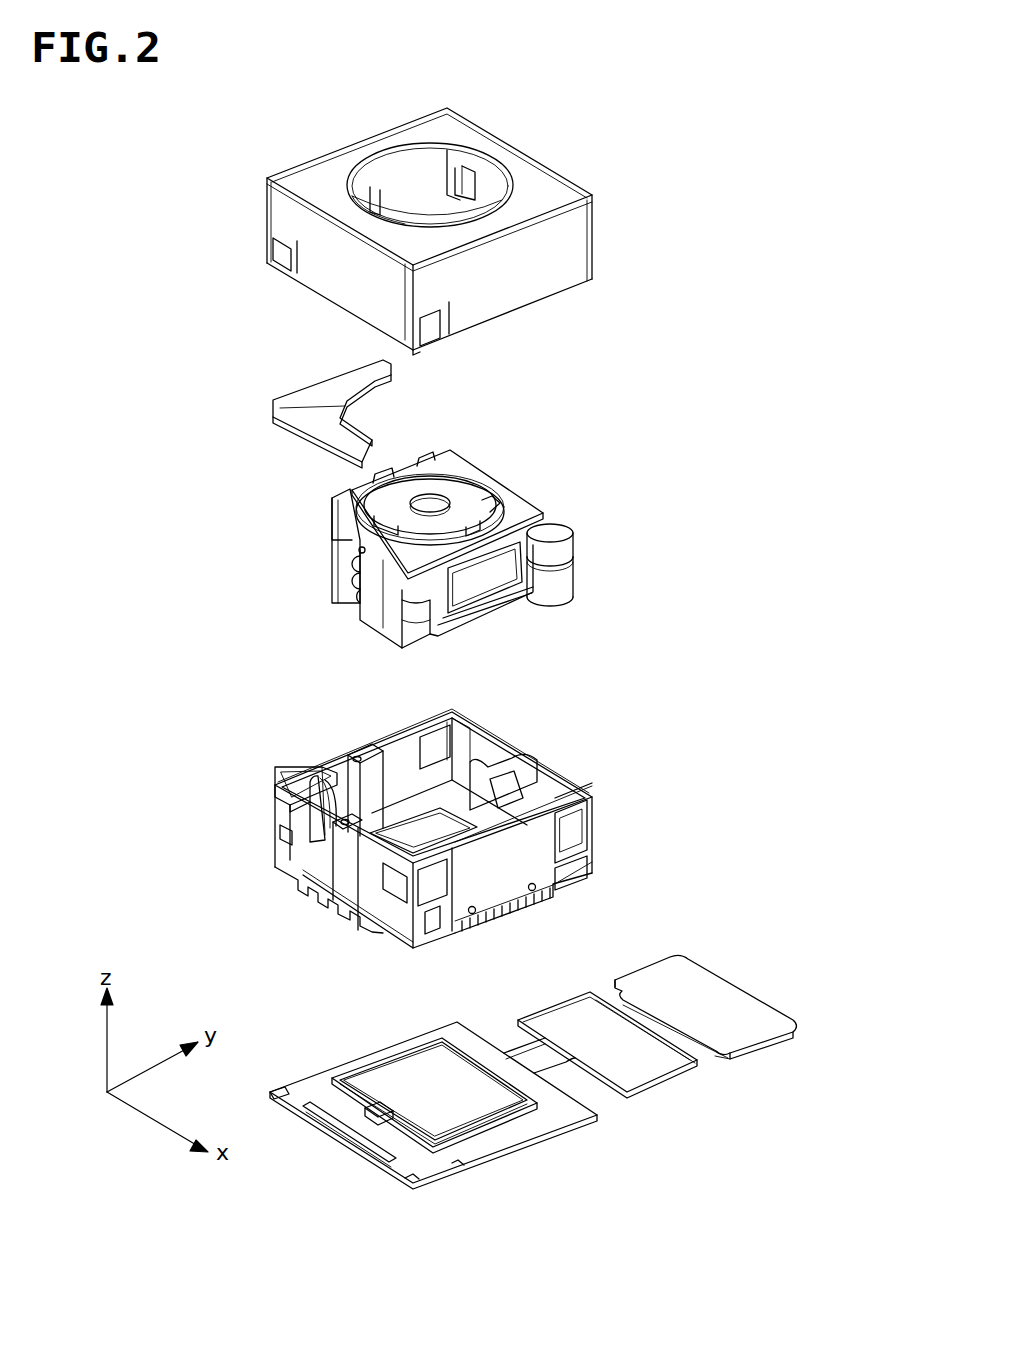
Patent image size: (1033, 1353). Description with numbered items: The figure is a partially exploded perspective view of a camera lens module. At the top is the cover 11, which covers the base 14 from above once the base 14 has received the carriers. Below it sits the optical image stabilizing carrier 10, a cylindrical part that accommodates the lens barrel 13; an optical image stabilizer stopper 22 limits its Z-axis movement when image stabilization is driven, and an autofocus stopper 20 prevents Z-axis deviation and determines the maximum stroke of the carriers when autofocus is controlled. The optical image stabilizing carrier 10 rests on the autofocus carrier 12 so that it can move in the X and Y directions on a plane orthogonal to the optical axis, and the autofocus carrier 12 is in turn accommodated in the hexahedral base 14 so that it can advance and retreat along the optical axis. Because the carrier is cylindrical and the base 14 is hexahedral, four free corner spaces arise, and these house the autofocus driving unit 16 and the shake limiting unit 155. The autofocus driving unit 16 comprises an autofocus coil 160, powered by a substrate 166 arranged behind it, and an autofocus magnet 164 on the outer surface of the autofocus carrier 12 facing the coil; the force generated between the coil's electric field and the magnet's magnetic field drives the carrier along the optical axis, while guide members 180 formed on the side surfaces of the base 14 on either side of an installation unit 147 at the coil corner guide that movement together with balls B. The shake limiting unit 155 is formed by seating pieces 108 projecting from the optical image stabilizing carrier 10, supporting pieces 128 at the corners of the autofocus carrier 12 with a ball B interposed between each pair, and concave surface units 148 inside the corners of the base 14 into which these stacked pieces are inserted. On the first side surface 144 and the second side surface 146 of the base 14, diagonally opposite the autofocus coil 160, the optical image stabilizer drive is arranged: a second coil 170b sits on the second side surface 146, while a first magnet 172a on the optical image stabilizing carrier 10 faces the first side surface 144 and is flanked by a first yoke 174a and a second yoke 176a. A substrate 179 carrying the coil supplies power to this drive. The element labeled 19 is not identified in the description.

The optical image stabilizing carrier 10 is at (450, 537).
The cover 11 is at (577, 239).
The autofocus carrier 12 is at (392, 626).
The lens barrel 13 is at (462, 500).
The base 14 is at (498, 839).
The autofocus driving unit 16 is at (185, 478).
The image sensor board with flexible printed circuit 19 is at (767, 962).
The autofocus stopper 20 is at (305, 400).
The optical image stabilizer stopper 22 is at (526, 510).
The ball B is at (336, 580).
The seating piece 108 is at (568, 549).
The supporting piece 128 is at (568, 577).
The first side surface 144 is at (446, 925).
The second side surface 146 is at (468, 731).
The installation unit 147 is at (290, 834).
The concave surface unit 148 is at (568, 778).
The shake limiting unit 155 is at (712, 522).
The autofocus coil 160 is at (355, 760).
The autofocus magnet 164 is at (336, 519).
The substrate 166 is at (282, 806).
The second coil 170b is at (507, 781).
The first magnet 172a is at (464, 583).
The first yoke 174a is at (473, 616).
The second yoke 176a is at (480, 590).
The substrate 179 is at (503, 885).
The guide member 180 is at (390, 748).